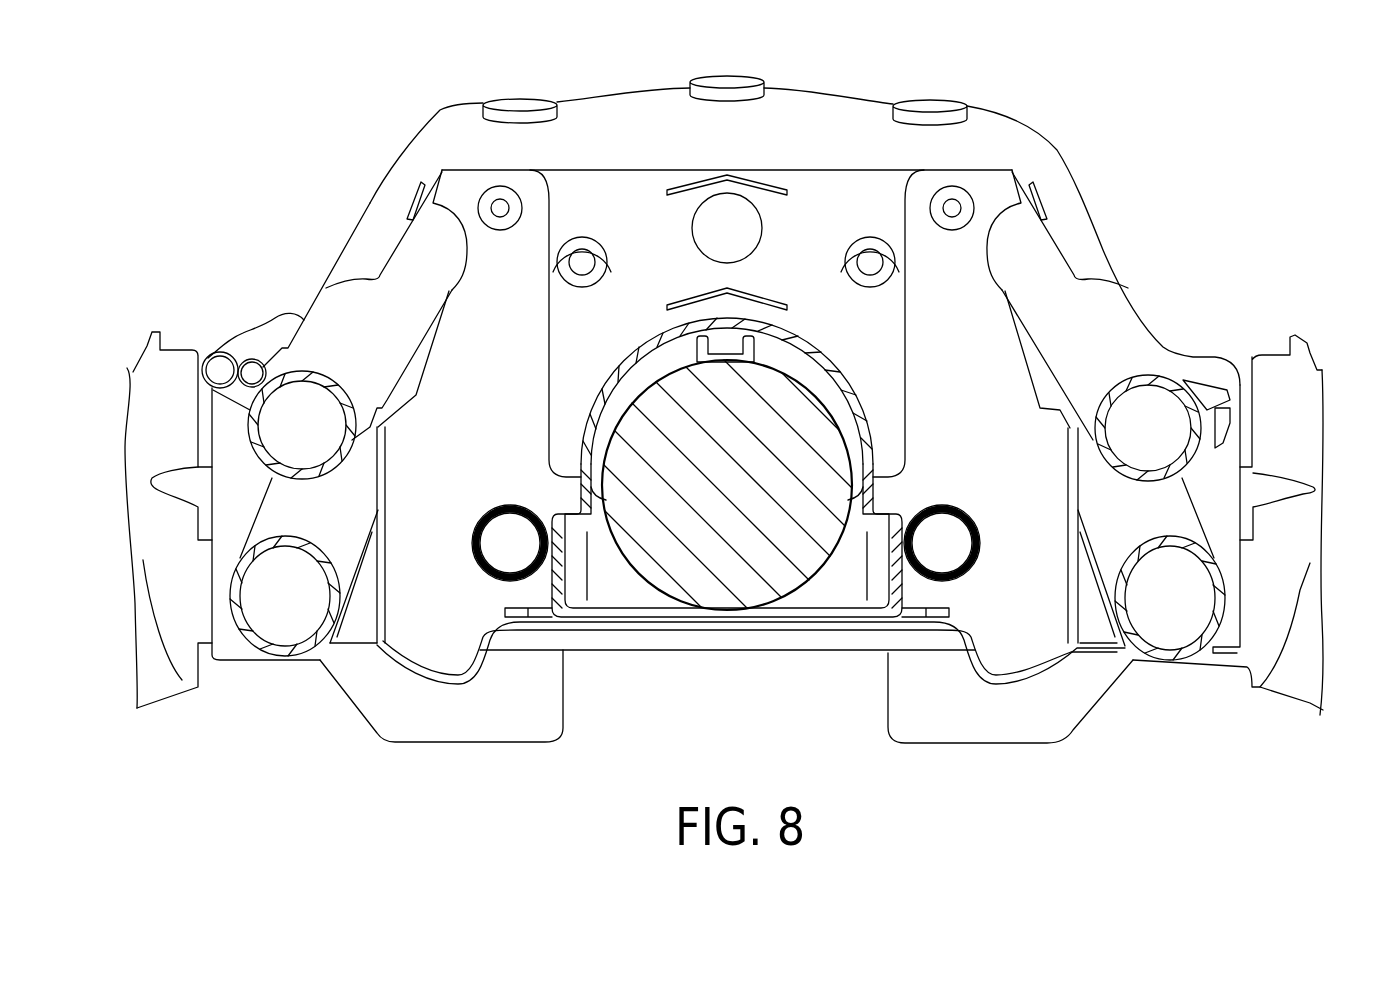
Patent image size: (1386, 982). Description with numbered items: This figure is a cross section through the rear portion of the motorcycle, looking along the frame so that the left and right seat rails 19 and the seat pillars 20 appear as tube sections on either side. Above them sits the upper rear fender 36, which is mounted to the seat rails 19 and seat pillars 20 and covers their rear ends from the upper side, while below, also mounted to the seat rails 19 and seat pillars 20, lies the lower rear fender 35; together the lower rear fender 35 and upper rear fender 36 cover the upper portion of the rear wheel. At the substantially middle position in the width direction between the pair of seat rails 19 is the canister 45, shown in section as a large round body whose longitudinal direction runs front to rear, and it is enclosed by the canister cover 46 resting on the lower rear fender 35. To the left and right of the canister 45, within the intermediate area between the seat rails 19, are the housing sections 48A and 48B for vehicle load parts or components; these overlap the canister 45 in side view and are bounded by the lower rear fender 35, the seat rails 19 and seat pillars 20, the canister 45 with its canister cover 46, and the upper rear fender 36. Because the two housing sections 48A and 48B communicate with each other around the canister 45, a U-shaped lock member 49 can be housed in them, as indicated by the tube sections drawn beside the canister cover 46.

The seat rail 19 is at (327, 317).
The seat pillar 20 is at (290, 507).
The lower rear fender 35 is at (658, 647).
The upper rear fender 36 is at (655, 110).
The canister 45 is at (747, 555).
The canister cover 46 is at (795, 335).
The housing section 48A is at (483, 447).
The housing section 48B is at (1010, 492).
The U-shaped lock member 49 is at (485, 573).